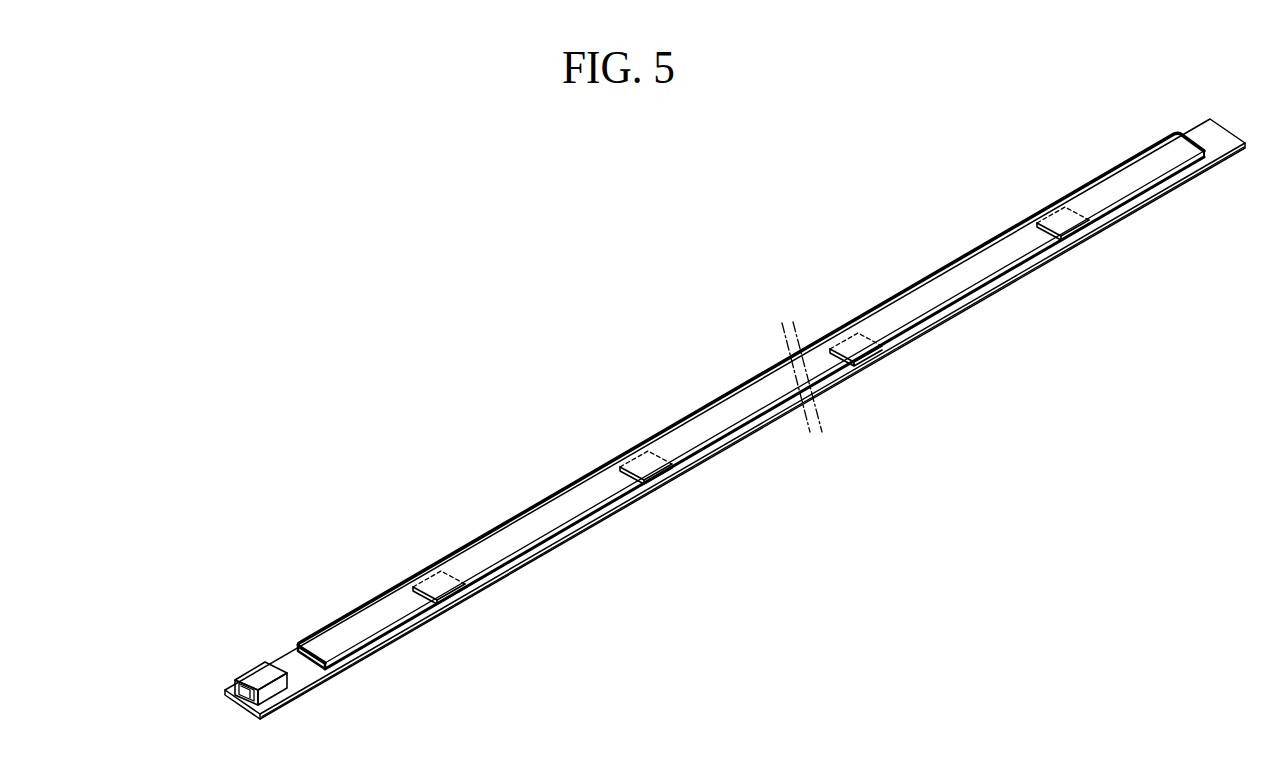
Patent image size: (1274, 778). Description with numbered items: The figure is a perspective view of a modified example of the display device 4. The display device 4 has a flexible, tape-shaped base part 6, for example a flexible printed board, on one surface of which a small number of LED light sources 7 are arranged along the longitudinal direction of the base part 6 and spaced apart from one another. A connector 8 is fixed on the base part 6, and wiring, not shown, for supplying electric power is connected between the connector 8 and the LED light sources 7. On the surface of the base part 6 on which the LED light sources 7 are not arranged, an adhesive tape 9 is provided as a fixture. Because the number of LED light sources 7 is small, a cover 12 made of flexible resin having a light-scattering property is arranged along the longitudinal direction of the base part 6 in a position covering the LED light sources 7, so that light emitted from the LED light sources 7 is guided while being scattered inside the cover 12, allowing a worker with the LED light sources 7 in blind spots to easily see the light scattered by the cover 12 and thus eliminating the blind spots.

The display device 4 is at (713, 309).
The base part 6 is at (287, 661).
The LED light source 7 is at (647, 462).
The connector 8 is at (253, 677).
The adhesive tape 9 is at (730, 448).
The cover 12 is at (528, 525).